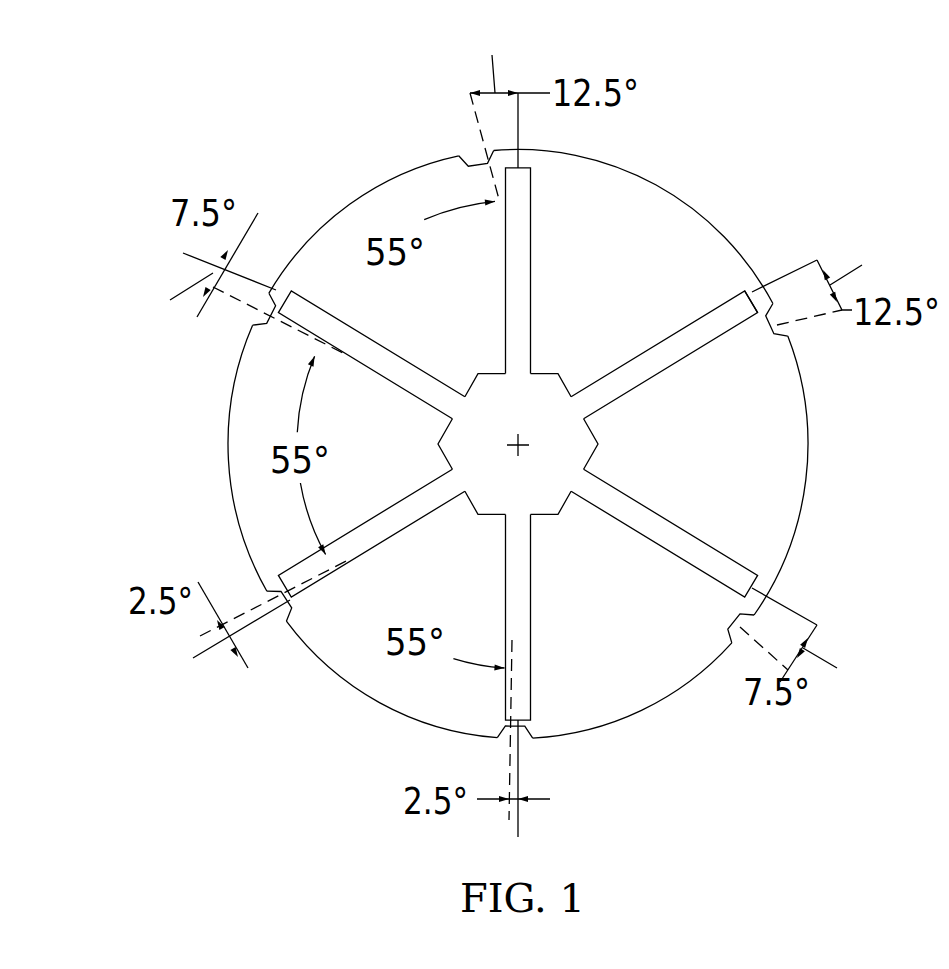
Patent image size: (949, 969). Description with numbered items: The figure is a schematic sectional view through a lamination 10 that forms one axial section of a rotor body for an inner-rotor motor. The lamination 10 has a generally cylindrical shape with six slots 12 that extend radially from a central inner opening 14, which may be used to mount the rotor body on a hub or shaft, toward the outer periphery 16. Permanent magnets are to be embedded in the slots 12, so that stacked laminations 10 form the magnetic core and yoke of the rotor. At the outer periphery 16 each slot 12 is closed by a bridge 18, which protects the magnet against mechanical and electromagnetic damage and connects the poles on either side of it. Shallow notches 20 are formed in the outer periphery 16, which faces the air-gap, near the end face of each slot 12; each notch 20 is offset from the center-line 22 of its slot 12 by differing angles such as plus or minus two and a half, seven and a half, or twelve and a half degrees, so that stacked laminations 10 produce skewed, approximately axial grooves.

The lamination 10 is at (775, 140).
The slot 12 is at (695, 343).
The inner opening 14 is at (576, 448).
The outer periphery 16 is at (650, 706).
The bridge 18 is at (750, 292).
The notch 20 is at (476, 162).
The center-line 22 is at (518, 130).